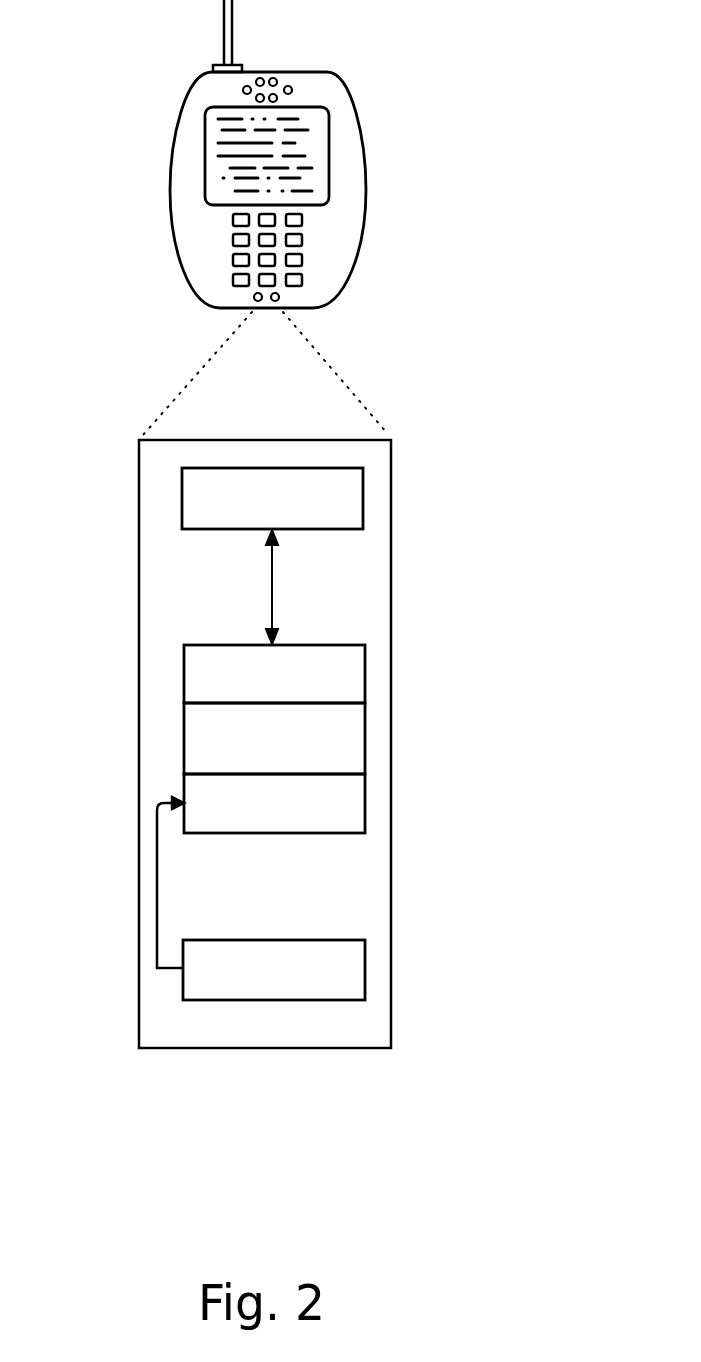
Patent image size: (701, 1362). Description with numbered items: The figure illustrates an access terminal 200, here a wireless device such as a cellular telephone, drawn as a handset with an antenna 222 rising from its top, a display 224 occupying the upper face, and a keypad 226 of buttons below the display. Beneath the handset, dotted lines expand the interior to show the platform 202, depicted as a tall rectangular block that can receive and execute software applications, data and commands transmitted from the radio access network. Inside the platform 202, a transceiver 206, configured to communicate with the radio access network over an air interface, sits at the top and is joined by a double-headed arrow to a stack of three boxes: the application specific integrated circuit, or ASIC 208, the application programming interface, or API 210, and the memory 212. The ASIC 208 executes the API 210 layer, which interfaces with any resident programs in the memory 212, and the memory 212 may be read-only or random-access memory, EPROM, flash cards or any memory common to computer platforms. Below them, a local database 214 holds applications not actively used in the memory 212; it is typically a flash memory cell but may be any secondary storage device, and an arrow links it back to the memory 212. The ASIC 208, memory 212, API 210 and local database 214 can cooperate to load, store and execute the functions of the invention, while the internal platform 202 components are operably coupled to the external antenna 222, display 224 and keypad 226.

The access terminal 200 is at (337, 285).
The platform 202 is at (139, 645).
The transceiver 206 is at (363, 498).
The application specific integrated circuit (ASIC) 208 is at (365, 683).
The application programming interface (API) 210 is at (365, 733).
The memory 212 is at (365, 803).
The local database 214 is at (365, 953).
The antenna 222 is at (236, 8).
The display 224 is at (329, 142).
The keypad 226 is at (302, 239).